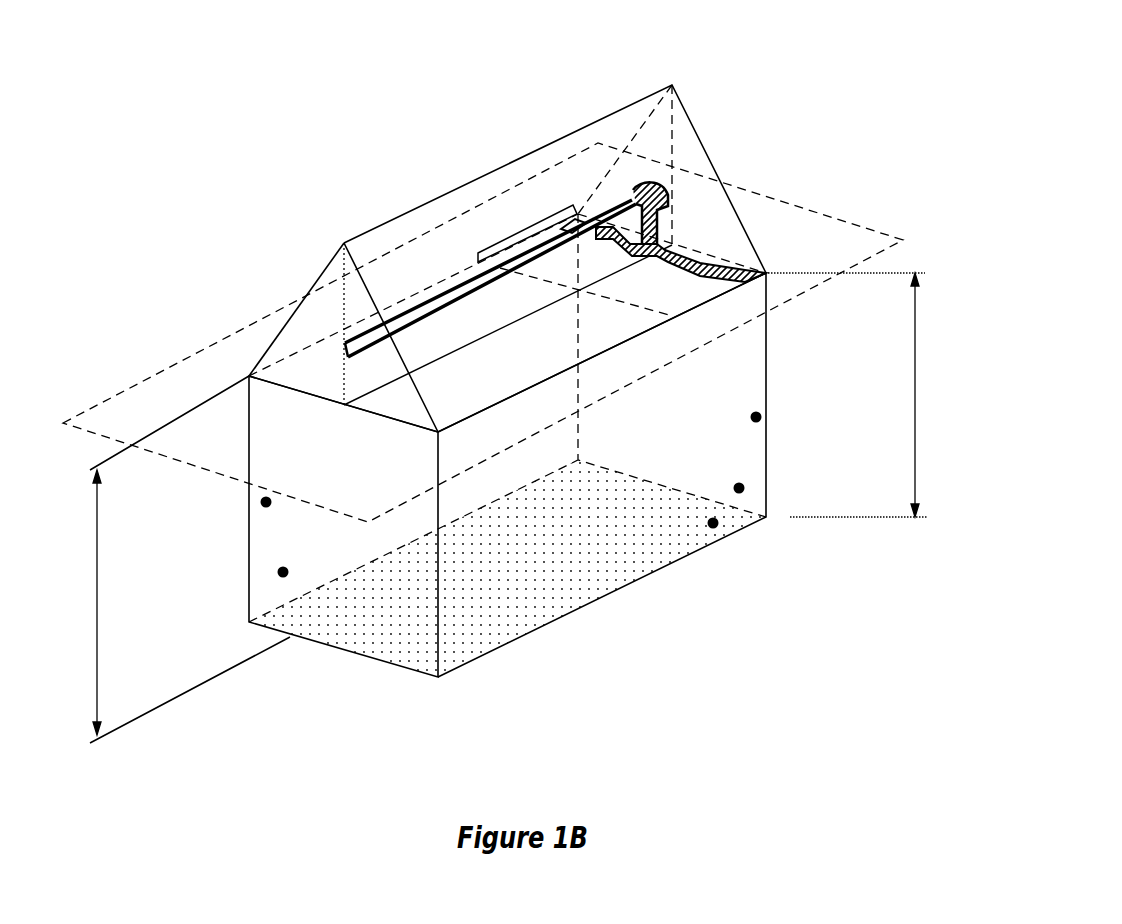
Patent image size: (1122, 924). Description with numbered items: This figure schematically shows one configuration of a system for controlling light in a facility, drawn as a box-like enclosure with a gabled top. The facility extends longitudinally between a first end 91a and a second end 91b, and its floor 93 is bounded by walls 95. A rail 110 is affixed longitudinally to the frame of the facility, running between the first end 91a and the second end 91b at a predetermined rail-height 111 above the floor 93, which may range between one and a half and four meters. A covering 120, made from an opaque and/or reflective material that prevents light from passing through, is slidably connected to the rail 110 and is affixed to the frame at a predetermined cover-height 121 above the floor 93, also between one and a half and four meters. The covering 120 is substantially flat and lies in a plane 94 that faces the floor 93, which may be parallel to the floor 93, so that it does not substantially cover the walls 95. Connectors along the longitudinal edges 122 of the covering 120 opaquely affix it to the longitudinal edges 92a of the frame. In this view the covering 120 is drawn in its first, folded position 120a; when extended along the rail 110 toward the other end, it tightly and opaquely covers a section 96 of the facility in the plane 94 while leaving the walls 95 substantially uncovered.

The first end 91a is at (720, 142).
The second end 91b is at (286, 349).
The longitudinal edges of frame 92a is at (448, 288).
The floor 93 is at (713, 523).
The plane 94 is at (118, 393).
The walls 95 is at (283, 572).
The section 96 is at (527, 229).
The rail 110 is at (620, 208).
The covering 120 is at (673, 247).
The first (folded) position 120a is at (733, 245).
The cover-height 121 is at (915, 415).
The longitudinal edges of covering 122 is at (766, 273).
The rail-height 111 is at (95, 593).